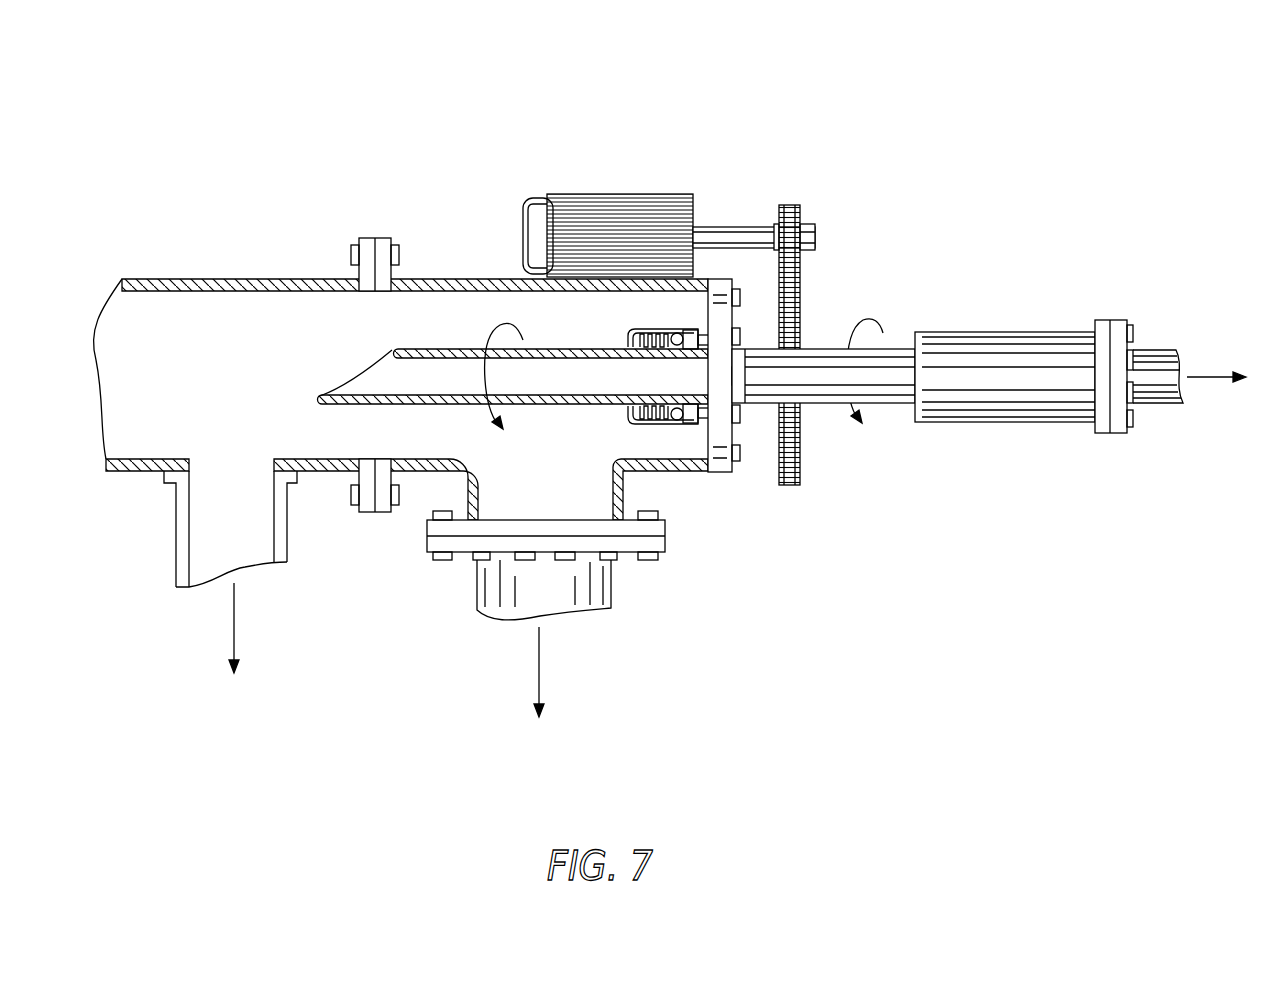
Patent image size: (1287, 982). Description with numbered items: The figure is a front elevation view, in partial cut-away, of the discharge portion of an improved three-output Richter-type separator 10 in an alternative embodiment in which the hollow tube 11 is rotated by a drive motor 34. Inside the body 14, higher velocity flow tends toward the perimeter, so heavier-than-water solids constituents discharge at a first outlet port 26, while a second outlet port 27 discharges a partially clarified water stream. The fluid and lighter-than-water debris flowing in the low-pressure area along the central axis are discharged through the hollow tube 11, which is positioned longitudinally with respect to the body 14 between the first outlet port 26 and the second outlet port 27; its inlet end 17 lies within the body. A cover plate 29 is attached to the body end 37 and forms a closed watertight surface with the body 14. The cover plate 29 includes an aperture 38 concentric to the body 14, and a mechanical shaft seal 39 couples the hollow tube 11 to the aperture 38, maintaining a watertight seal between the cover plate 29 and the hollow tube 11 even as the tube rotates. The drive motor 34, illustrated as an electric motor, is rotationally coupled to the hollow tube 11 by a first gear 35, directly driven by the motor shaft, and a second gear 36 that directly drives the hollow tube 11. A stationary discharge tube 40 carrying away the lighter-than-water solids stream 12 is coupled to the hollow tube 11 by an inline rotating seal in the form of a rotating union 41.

The three-output Richter-type separator 10 is at (670, 411).
The hollow tube 11 is at (599, 389).
The lighter-than-water solids stream 12 is at (1213, 378).
The body 14 is at (196, 279).
The lance tip 17 is at (357, 370).
The first outlet port 26 is at (176, 533).
The second outlet port 27 is at (477, 585).
The cover plate 29 is at (735, 432).
The drive motor 34 is at (643, 192).
The first gear 35 is at (790, 205).
The second gear 36 is at (790, 488).
The body end 37 is at (712, 470).
The aperture 38 is at (722, 345).
The mechanical shaft seal 39 is at (636, 425).
The stationary discharge tube 40 is at (1145, 350).
The rotating union 41 is at (960, 332).